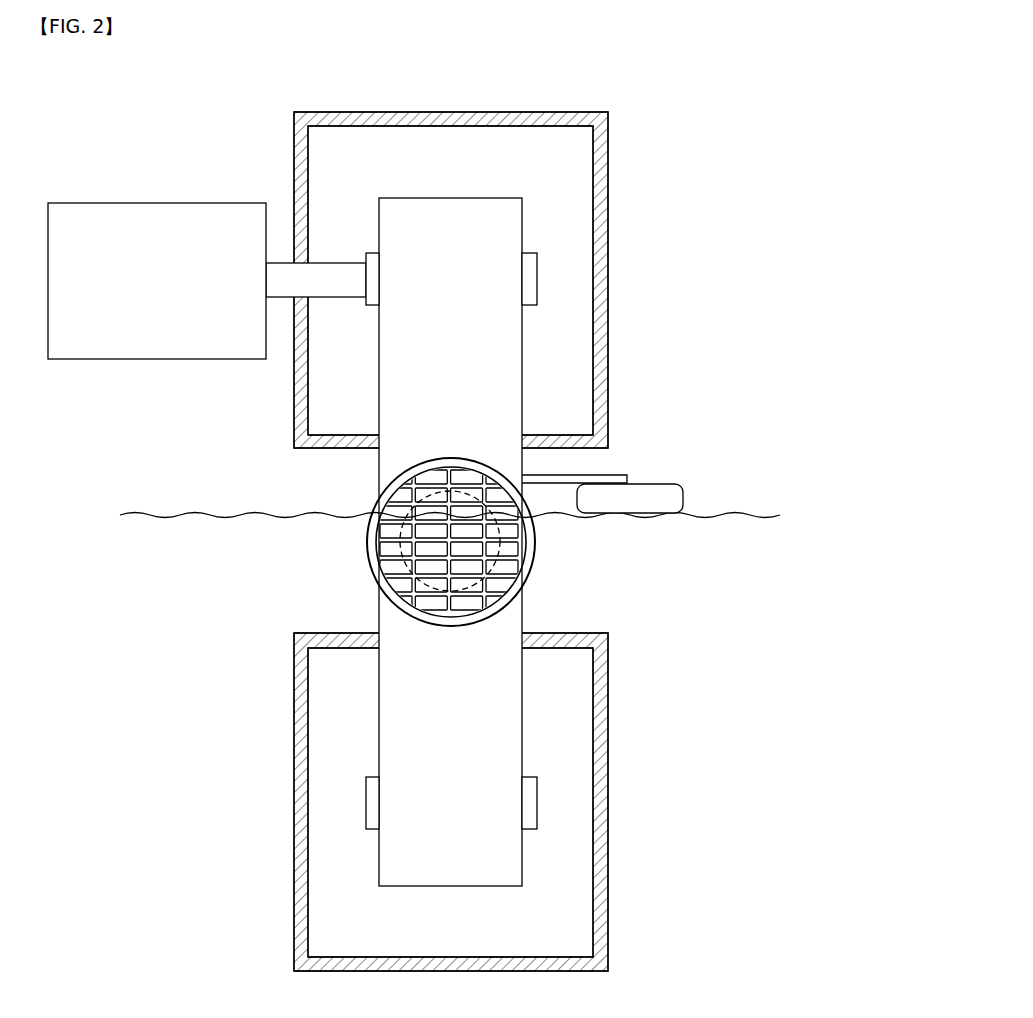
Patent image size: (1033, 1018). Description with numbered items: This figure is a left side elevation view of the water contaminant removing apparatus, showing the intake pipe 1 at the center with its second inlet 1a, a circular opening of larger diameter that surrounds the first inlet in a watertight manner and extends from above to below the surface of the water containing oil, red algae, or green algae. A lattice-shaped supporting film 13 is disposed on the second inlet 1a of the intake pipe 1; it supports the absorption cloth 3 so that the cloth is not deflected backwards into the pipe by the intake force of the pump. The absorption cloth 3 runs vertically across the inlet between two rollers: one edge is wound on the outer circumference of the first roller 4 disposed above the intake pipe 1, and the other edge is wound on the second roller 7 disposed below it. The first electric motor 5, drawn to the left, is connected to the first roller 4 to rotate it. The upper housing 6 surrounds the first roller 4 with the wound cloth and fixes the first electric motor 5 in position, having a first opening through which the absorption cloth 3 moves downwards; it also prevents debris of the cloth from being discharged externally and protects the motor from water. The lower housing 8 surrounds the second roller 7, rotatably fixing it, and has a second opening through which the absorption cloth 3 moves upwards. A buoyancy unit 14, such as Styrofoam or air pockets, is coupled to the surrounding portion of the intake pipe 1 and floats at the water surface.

The intake pipe 1 is at (368, 545).
The second inlet 1a is at (368, 563).
The absorption cloth 3 is at (482, 362).
The first roller 4 is at (538, 283).
The first electric motor 5 is at (163, 203).
The upper housing 6 is at (606, 173).
The second roller 7 is at (530, 801).
The lower housing 8 is at (605, 898).
The lattice-shaped supporting film 13 is at (528, 566).
The buoyancy unit 14 is at (657, 490).